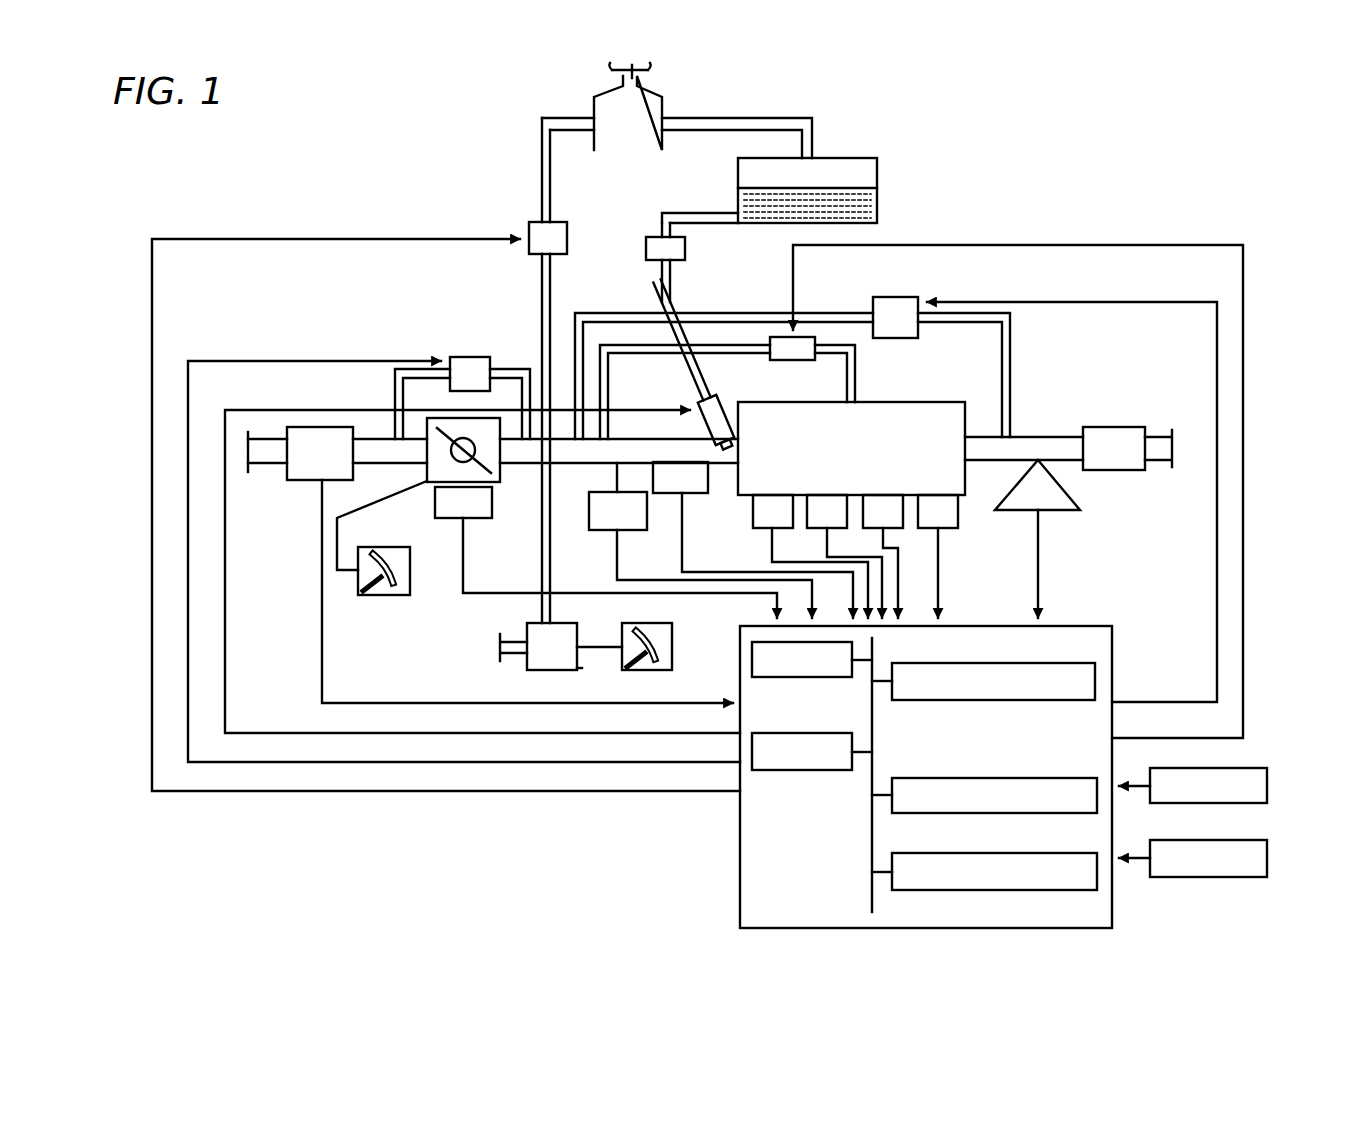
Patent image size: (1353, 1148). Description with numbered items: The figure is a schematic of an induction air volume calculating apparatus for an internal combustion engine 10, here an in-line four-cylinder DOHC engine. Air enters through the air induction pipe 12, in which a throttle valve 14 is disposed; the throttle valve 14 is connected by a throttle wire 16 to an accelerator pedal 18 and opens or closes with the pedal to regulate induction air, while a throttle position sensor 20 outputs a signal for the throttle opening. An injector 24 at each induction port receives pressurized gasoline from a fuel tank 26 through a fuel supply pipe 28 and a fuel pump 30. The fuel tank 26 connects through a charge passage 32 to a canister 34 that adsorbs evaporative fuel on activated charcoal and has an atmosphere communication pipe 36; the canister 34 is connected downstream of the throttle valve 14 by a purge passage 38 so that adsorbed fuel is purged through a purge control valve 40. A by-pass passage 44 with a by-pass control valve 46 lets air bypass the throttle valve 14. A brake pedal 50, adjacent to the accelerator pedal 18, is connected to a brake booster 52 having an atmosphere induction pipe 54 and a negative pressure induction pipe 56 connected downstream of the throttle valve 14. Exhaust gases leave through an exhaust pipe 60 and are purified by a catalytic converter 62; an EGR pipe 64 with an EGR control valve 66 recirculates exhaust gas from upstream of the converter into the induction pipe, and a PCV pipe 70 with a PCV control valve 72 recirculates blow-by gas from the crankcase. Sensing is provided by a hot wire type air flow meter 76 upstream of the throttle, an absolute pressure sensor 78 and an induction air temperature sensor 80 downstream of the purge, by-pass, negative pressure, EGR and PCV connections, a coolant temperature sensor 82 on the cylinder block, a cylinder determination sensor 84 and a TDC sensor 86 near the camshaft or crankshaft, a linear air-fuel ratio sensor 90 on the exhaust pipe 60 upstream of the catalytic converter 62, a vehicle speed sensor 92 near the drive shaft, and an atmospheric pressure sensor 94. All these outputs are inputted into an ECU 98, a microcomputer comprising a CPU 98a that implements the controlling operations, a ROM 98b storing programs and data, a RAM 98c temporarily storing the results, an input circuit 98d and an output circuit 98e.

The internal combustion engine 10 is at (955, 402).
The air induction pipe 12 is at (272, 466).
The throttle valve 14 is at (501, 478).
The throttle wire 16 is at (389, 498).
The accelerator pedal 18 is at (388, 597).
The throttle position sensor 20 is at (483, 520).
The injector 24 is at (718, 398).
The fuel tank 26 is at (738, 181).
The fuel supply pipe 28 is at (672, 292).
The fuel pump 30 is at (687, 248).
The charge passage 32 is at (711, 118).
The canister 34 is at (619, 151).
The atmosphere communication pipe 36 is at (620, 80).
The purge passage 38 is at (541, 170).
The purge control valve 40 is at (569, 240).
The by-pass passage 44 is at (510, 368).
The by-pass control valve 46 is at (465, 356).
The brake pedal 50 is at (674, 647).
The brake booster 52 is at (580, 669).
The atmosphere induction pipe 54 is at (505, 662).
The negative pressure induction pipe 56 is at (542, 578).
The exhaust pipe 60 is at (1040, 436).
The catalytic converter 62 is at (1112, 427).
The EGR pipe 64 is at (1011, 347).
The EGR control valve 66 is at (900, 297).
The PCV pipe 70 is at (857, 372).
The PCV control valve 72 is at (795, 362).
The hot wire type air flow meter 76 is at (300, 482).
The absolute pressure sensor 78 is at (606, 532).
The induction air temperature sensor 80 is at (683, 500).
The coolant temperature sensor 82 is at (760, 530).
The cylinder determination sensor 84 is at (809, 530).
The TDC sensor 86 is at (865, 530).
The linear air-fuel ratio sensor 90 is at (1050, 512).
The vehicle speed sensor 92 is at (1268, 787).
The atmospheric pressure sensor 94 is at (1268, 859).
The ECU 98 is at (901, 777).
The CPU 98a is at (791, 679).
The ROM 98b is at (791, 771).
The RAM 98c is at (1011, 663).
The input circuit 98d is at (1011, 778).
The output circuit 98e is at (1011, 853).